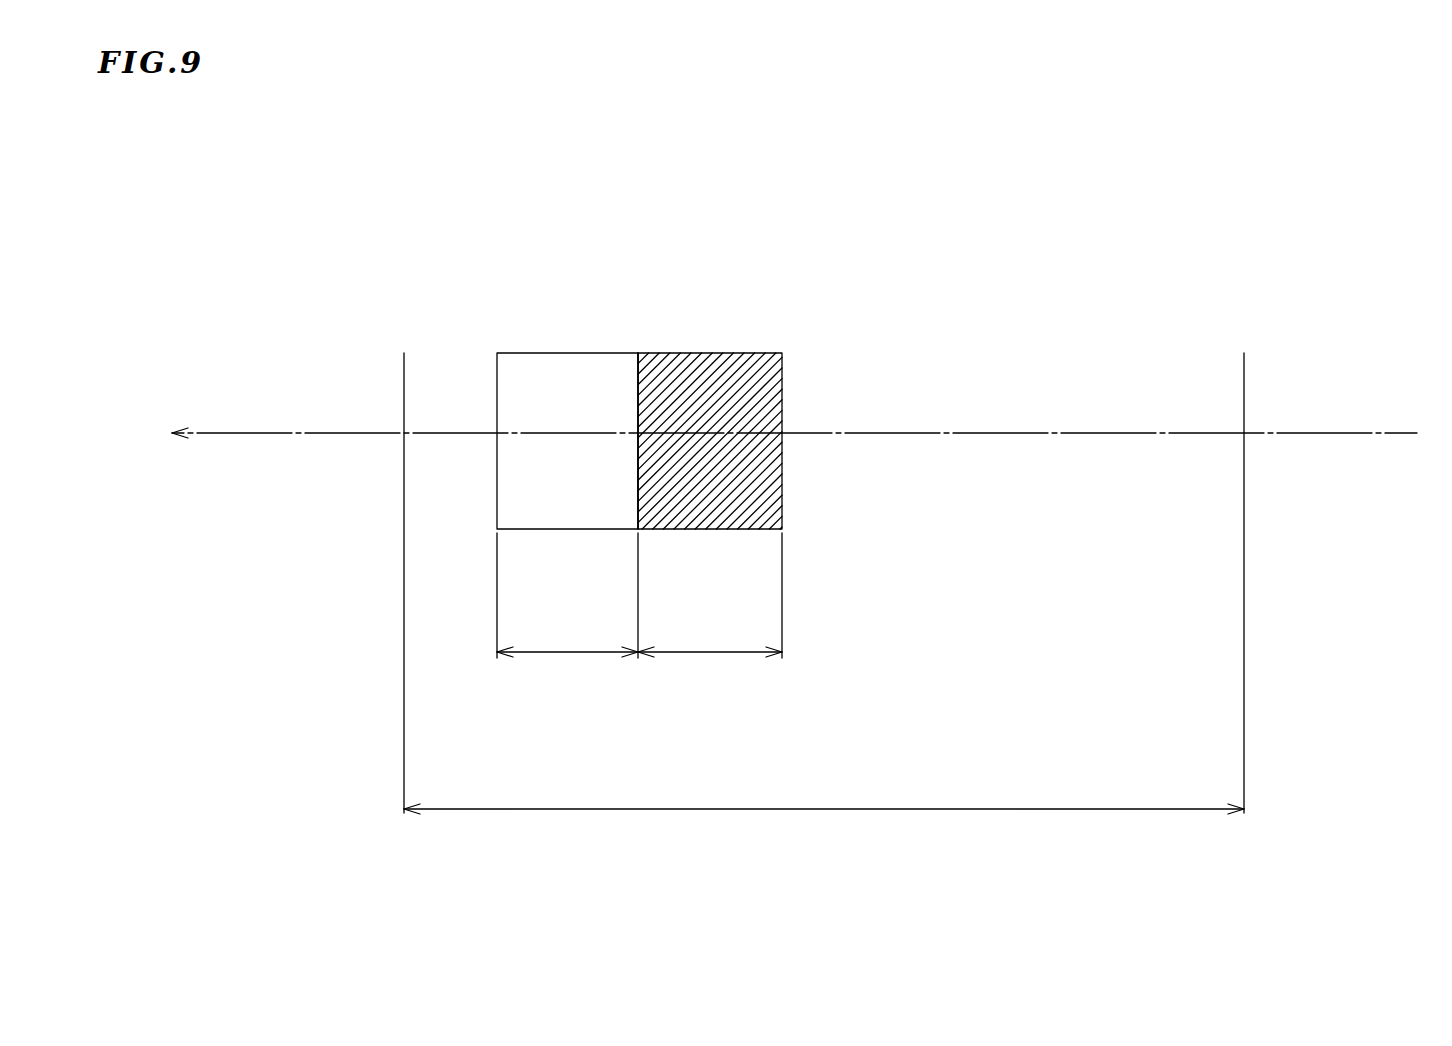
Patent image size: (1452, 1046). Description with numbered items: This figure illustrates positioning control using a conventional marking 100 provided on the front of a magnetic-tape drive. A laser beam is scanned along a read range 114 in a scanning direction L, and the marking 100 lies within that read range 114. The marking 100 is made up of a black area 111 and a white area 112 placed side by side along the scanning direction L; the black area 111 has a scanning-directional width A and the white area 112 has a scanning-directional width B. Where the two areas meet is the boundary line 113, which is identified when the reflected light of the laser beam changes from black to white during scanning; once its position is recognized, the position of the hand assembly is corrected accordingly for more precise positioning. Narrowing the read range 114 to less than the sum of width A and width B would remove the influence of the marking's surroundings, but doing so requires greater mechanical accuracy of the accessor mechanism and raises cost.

The marking 100 is at (785, 183).
The black area 111 is at (722, 352).
The white area 112 is at (542, 352).
The boundary line 113 is at (638, 393).
The read range 114 is at (917, 810).
The scanning direction L is at (1397, 433).
The scanning-directional width of the black area A is at (718, 652).
The scanning-directional width of the white area B is at (566, 652).